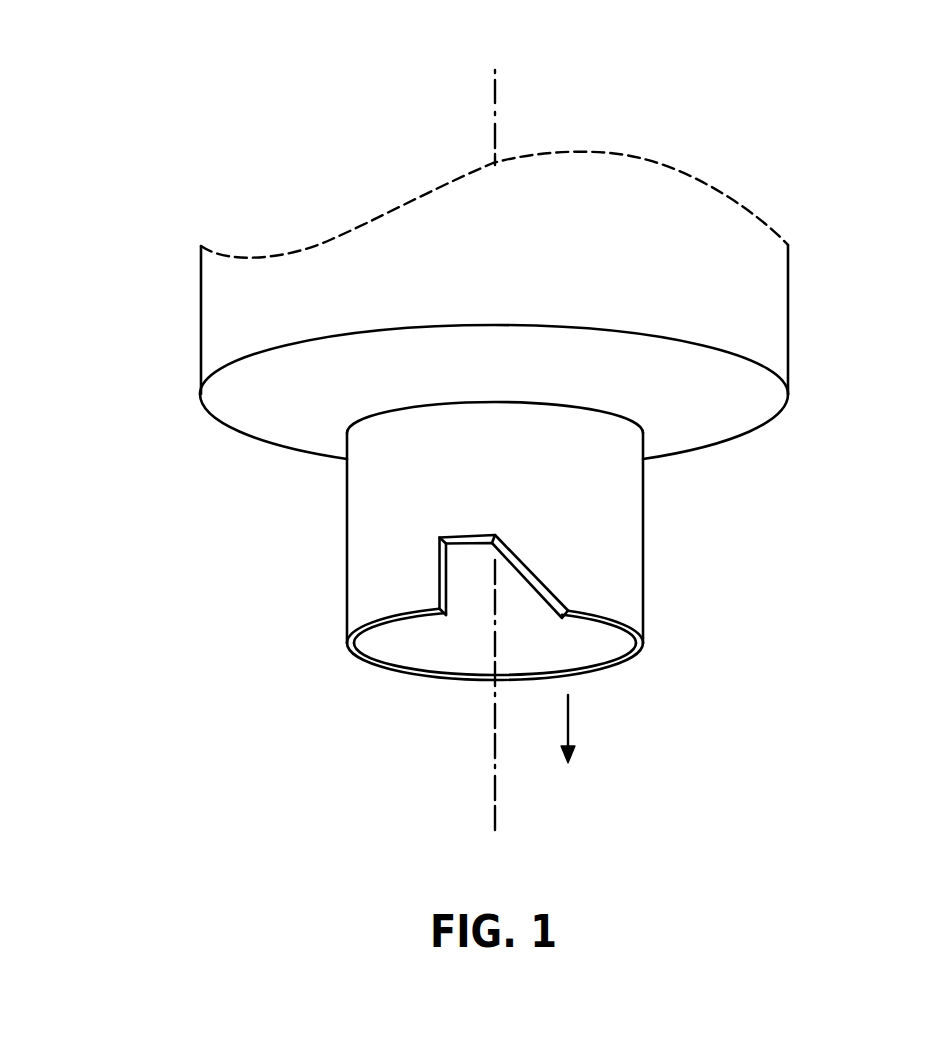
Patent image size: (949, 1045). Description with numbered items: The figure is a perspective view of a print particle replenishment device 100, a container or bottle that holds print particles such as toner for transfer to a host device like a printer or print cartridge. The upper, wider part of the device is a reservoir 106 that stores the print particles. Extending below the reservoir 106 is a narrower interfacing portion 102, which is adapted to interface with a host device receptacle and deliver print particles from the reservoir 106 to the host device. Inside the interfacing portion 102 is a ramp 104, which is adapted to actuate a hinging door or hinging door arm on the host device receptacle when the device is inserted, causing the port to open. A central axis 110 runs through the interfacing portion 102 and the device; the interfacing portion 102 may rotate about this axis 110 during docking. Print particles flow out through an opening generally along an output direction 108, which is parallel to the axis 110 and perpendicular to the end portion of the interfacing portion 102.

The print particle replenishment device 100 is at (239, 150).
The interfacing portion 102 is at (292, 420).
The ramp 104 is at (545, 583).
The reservoir 106 is at (847, 323).
The output direction 108 is at (568, 723).
The axis 110 is at (495, 788).